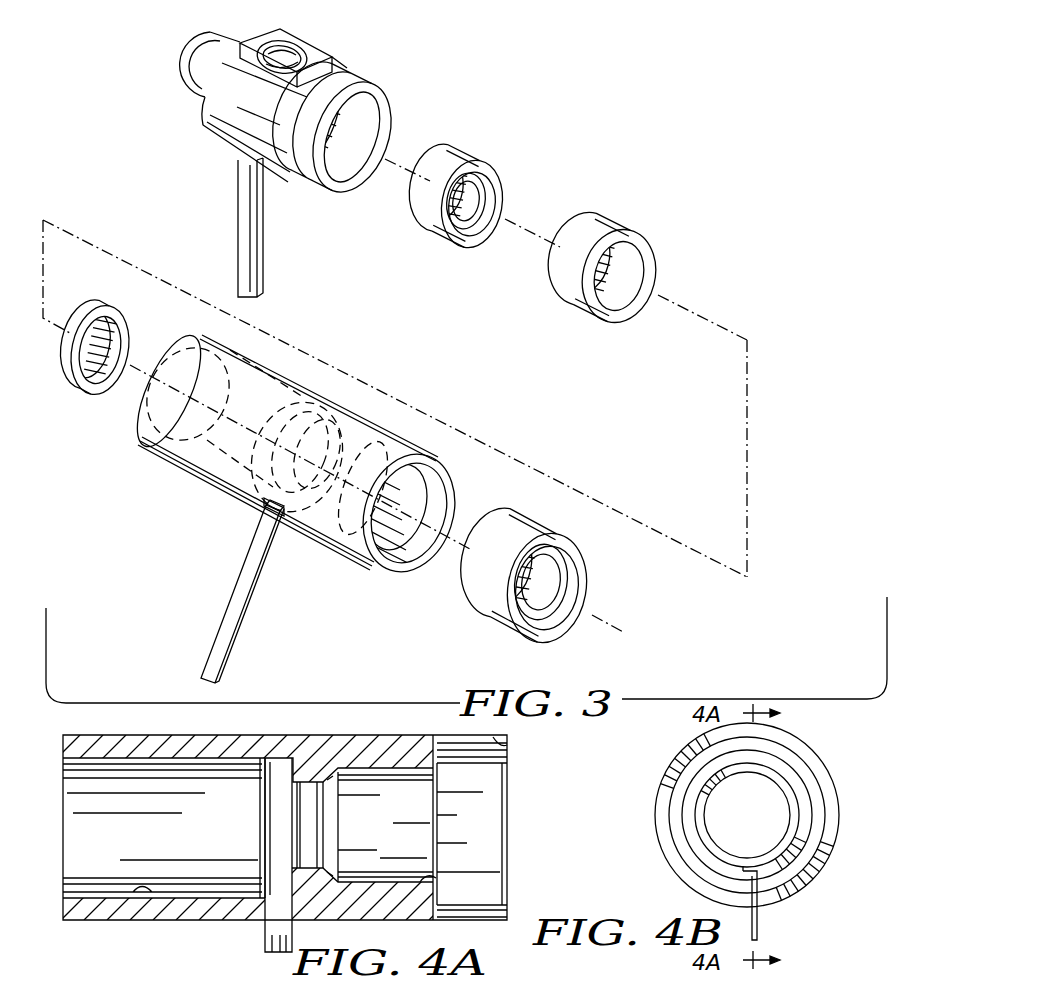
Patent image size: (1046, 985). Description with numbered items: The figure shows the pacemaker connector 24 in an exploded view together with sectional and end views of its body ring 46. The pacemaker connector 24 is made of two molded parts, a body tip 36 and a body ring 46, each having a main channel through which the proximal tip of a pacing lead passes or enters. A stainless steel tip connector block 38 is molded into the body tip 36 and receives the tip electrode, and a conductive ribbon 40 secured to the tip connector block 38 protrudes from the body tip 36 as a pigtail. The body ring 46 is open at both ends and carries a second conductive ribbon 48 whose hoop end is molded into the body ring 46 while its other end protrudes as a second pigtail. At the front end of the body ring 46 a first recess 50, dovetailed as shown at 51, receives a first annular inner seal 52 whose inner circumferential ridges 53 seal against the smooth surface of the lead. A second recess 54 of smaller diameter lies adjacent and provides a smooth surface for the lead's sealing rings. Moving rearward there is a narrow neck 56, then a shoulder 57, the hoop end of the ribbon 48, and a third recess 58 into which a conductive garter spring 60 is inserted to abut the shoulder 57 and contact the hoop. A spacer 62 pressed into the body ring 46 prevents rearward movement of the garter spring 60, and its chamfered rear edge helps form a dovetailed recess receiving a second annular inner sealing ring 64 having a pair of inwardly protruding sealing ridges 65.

In FIG. 3, the pacemaker connector 24 is at (622, 92).
In FIG. 3, the body tip 36 is at (203, 127).
In FIG. 3, the tip connector block 38 is at (327, 53).
In FIG. 3, the conductive ribbon 40 is at (247, 225).
In FIG. 3, the body ring 46 is at (200, 480).
In FIG. 4A, the body ring 46 is at (285, 718).
In FIG. 4B, the body ring 46 is at (688, 755).
In FIG. 3, the conductive ribbon 48 is at (243, 580).
In FIG. 4A, the conductive ribbon 48 is at (267, 935).
In FIG. 4B, the conductive ribbon 48 is at (760, 920).
In FIG. 4A, the first recess 50 is at (507, 750).
In FIG. 4A, the dovetail 51 is at (440, 763).
In FIG. 3, the first annular inner seal 52 is at (487, 617).
In FIG. 3, the inner circumferential ridges 53 is at (570, 577).
In FIG. 4A, the second recess 54 is at (427, 874).
In FIG. 4A, the narrow neck 56 is at (333, 808).
In FIG. 4A, the shoulder 57 is at (287, 772).
In FIG. 4A, the third recess 58 is at (130, 893).
In FIG. 3, the garter spring 60 is at (74, 393).
In FIG. 3, the spacer 62 is at (627, 218).
In FIG. 3, the second annular inner sealing ring 64 is at (478, 154).
In FIG. 3, the sealing ridges 65 is at (470, 243).